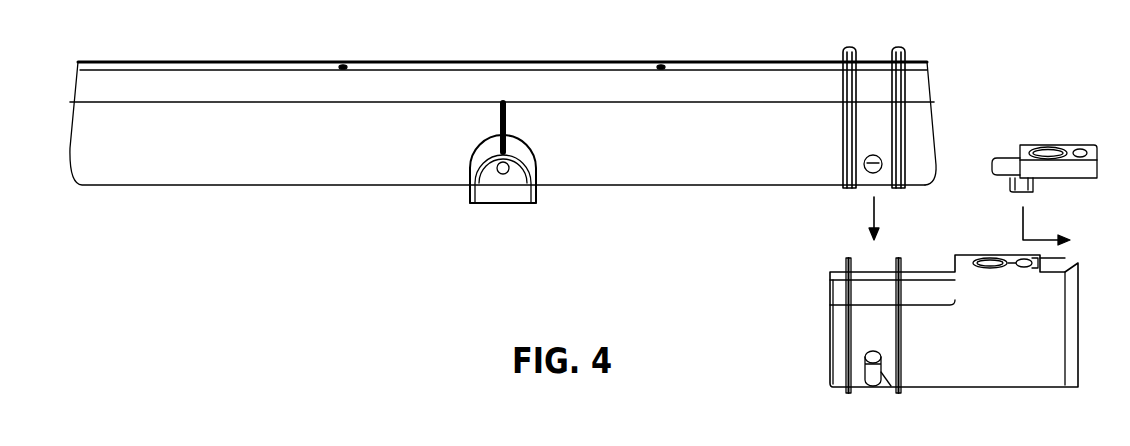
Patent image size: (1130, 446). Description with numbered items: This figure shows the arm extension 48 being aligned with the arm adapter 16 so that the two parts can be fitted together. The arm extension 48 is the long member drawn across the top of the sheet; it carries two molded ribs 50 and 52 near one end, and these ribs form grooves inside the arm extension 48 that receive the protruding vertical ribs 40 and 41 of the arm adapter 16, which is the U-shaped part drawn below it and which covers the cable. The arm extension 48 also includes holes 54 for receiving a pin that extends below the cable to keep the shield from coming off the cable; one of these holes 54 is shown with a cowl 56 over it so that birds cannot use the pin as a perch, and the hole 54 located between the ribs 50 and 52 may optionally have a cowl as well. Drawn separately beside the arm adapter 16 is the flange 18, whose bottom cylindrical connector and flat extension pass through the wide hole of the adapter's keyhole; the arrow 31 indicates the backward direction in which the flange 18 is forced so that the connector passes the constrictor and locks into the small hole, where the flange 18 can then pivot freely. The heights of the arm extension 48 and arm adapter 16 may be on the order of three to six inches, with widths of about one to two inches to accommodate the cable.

The arm adapter 16 is at (923, 388).
The flange 18 is at (1095, 148).
The arrow 31 is at (1040, 240).
The vertical rib 40 is at (845, 258).
The vertical rib 41 is at (899, 258).
The arm extension 48 is at (721, 66).
The molded rib 50 is at (848, 46).
The molded rib 52 is at (897, 46).
The hole 54 is at (505, 175).
The cowl 56 is at (468, 187).